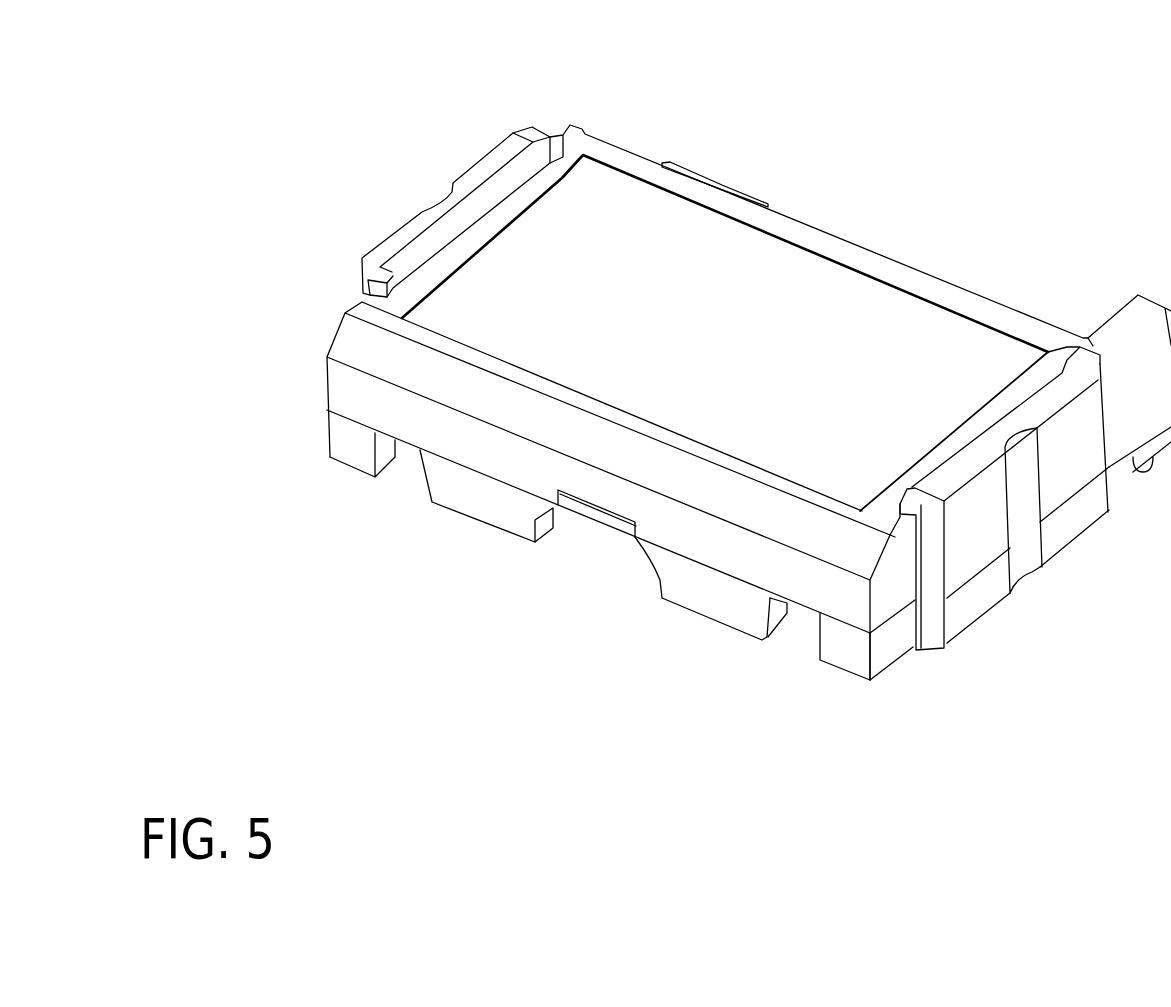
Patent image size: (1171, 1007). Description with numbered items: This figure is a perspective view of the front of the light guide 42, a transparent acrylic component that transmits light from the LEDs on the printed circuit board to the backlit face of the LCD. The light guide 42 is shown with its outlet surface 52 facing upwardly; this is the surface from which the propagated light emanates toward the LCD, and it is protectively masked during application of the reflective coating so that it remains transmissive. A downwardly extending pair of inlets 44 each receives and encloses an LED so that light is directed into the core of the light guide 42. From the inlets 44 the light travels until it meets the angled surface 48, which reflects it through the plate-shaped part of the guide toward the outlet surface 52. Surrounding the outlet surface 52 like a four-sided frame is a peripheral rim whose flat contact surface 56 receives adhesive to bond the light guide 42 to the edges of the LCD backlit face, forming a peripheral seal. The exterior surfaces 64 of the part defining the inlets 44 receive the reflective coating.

The light guide 42 is at (931, 246).
The inlets 44 is at (455, 520).
The angled surface 48 is at (418, 368).
The outlet surface 52 is at (725, 333).
The contact surface 56 is at (818, 237).
The exterior surfaces 64 is at (472, 504).